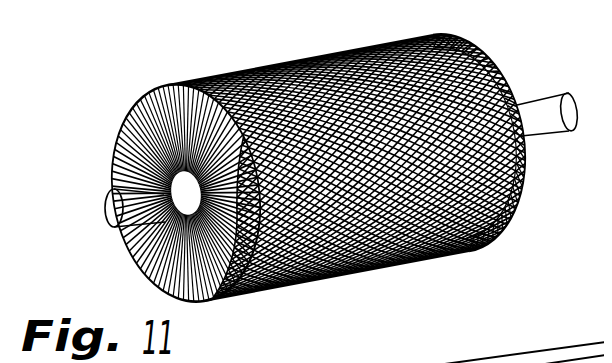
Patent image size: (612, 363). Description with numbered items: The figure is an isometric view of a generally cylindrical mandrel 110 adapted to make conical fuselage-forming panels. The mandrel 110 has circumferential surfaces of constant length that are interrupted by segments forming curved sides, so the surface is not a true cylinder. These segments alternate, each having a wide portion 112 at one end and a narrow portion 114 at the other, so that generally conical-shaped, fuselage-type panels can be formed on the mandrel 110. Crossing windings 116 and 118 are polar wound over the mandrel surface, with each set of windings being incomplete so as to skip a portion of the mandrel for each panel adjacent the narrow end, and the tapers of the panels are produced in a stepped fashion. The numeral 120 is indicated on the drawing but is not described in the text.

The generally cylindrical mandrel 110 is at (531, 178).
The wide portion 112 is at (499, 196).
The narrow portion 114 is at (529, 128).
The crossing windings 116 is at (462, 43).
The crossing windings 118 is at (493, 63).
The cylindrical mesh body 120 is at (314, 275).